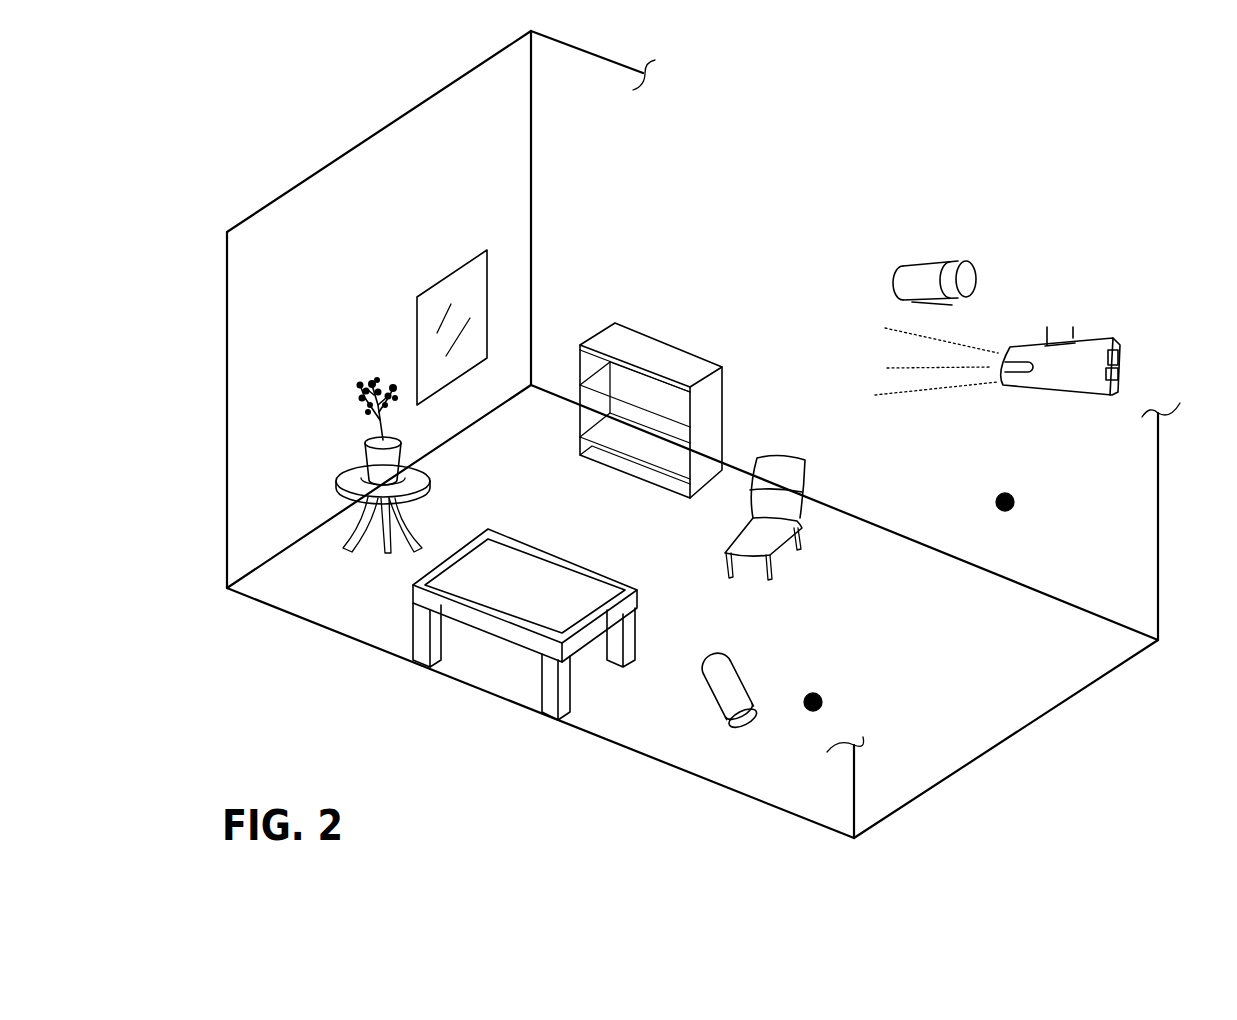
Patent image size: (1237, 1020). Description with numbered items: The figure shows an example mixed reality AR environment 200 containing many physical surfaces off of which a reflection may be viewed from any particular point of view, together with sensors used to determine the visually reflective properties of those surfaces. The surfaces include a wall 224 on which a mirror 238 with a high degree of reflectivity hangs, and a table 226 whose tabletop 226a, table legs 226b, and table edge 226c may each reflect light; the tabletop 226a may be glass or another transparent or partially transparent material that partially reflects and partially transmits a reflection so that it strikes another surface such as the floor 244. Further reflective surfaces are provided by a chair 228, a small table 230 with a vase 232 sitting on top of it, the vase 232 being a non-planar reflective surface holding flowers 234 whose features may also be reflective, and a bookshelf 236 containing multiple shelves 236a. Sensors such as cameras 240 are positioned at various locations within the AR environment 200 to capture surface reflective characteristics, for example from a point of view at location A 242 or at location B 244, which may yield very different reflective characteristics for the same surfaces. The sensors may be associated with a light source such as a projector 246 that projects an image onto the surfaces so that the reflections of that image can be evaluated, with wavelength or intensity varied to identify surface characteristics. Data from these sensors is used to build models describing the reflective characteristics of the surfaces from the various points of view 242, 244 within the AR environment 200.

The AR environment 200 is at (786, 124).
The wall 224 is at (328, 222).
The table 226 is at (455, 657).
The tabletop 226a is at (487, 571).
The table legs 226b is at (548, 690).
The table edge 226c is at (585, 637).
The chair 228 is at (780, 466).
The small table 230 is at (348, 483).
The vase 232 is at (372, 461).
The flowers 234 is at (358, 390).
The bookshelf 236 is at (676, 365).
The shelves 236a is at (611, 380).
The mirror 238 is at (455, 268).
The cameras 240 is at (925, 262).
The point of view (location A) 242 is at (1062, 476).
The point of view (location B) / floor 244 is at (888, 673).
The projector 246 is at (1095, 338).